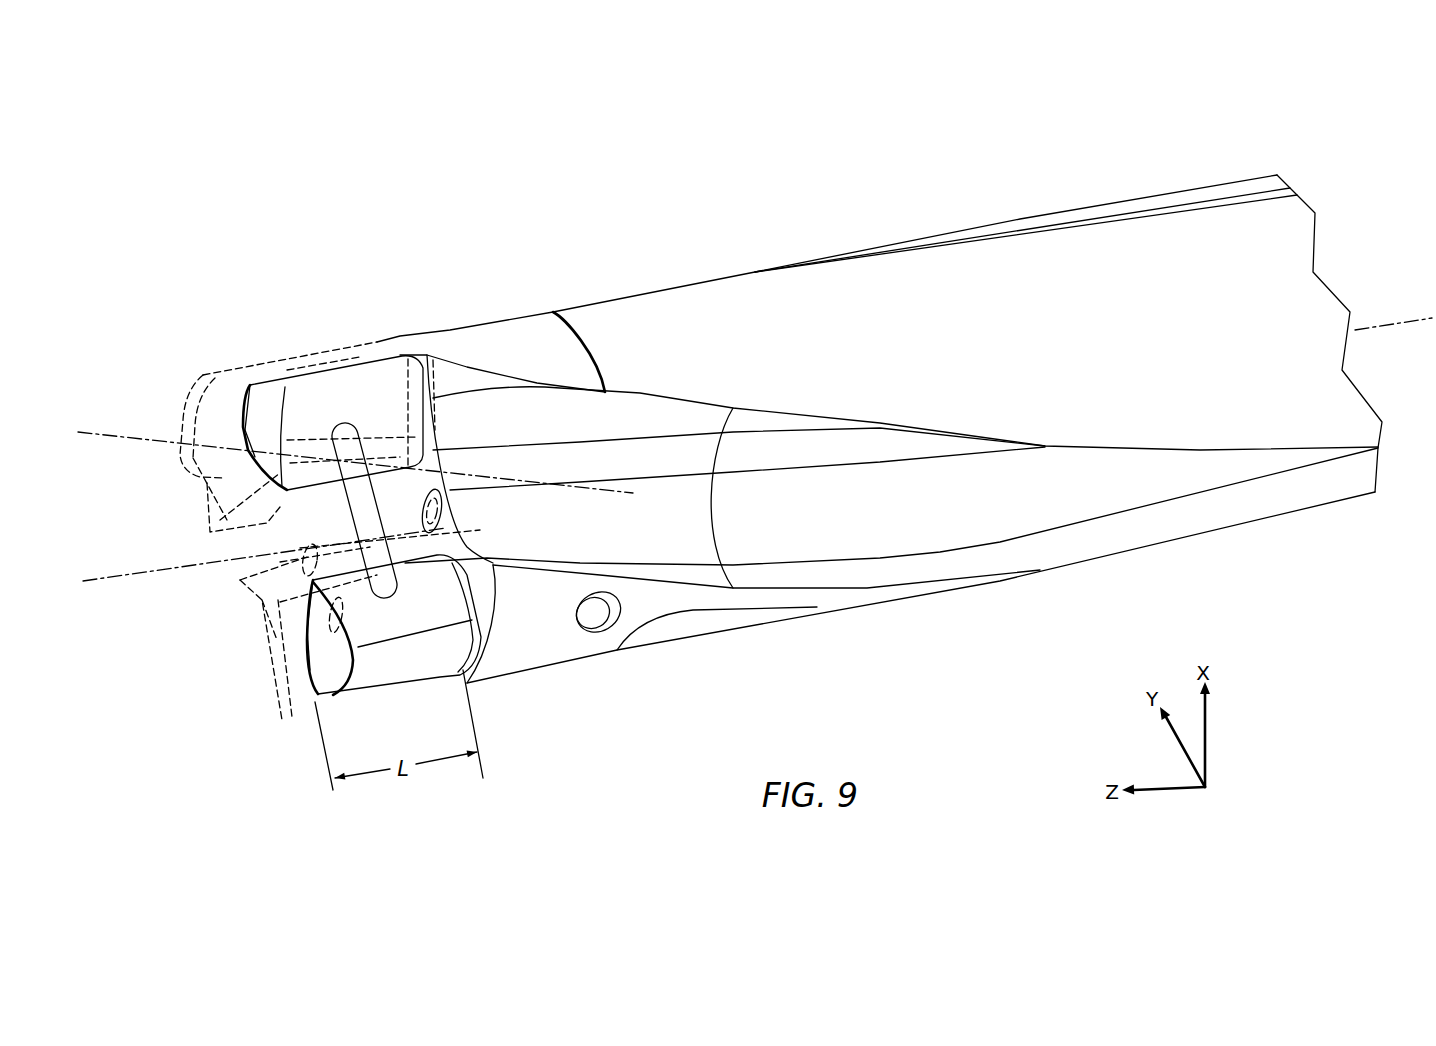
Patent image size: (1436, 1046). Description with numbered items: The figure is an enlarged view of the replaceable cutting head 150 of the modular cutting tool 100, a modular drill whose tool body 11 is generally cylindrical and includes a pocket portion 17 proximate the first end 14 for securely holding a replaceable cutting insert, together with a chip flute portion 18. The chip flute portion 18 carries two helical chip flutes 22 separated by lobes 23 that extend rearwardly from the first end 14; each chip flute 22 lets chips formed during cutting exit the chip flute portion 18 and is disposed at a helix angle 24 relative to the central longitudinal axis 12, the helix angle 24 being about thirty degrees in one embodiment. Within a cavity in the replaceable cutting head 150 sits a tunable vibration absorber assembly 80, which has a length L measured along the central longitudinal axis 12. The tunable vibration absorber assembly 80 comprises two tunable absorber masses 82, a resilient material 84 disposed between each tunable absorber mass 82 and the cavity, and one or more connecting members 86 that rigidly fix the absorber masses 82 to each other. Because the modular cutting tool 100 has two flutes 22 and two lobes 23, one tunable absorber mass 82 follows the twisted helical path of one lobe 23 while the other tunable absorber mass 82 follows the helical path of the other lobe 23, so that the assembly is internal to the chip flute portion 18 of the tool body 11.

The modular cutting tool 100 is at (573, 189).
The tool body 11 is at (1143, 183).
The central longitudinal axis 12 is at (155, 567).
The first end 14 is at (217, 660).
The pocket portion 17 is at (483, 719).
The chip flute portion 18 is at (1225, 545).
The chip flute 22 is at (893, 533).
The lobe 23 is at (980, 282).
The helix angle 24 is at (113, 438).
The tunable vibration absorber assembly 80 is at (348, 360).
The tunable absorber mass 82 is at (262, 413).
The resilient material 84 is at (247, 442).
The connecting member 86 is at (442, 514).
The replaceable cutting head 150 is at (300, 348).